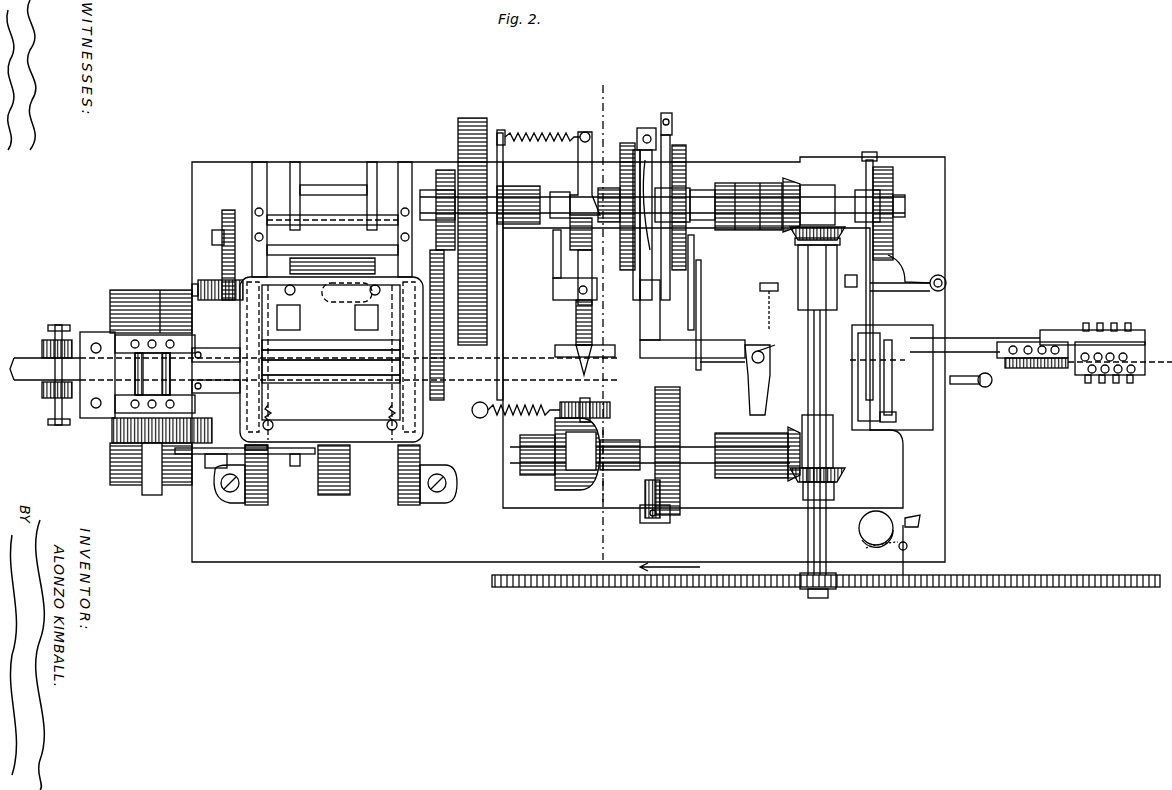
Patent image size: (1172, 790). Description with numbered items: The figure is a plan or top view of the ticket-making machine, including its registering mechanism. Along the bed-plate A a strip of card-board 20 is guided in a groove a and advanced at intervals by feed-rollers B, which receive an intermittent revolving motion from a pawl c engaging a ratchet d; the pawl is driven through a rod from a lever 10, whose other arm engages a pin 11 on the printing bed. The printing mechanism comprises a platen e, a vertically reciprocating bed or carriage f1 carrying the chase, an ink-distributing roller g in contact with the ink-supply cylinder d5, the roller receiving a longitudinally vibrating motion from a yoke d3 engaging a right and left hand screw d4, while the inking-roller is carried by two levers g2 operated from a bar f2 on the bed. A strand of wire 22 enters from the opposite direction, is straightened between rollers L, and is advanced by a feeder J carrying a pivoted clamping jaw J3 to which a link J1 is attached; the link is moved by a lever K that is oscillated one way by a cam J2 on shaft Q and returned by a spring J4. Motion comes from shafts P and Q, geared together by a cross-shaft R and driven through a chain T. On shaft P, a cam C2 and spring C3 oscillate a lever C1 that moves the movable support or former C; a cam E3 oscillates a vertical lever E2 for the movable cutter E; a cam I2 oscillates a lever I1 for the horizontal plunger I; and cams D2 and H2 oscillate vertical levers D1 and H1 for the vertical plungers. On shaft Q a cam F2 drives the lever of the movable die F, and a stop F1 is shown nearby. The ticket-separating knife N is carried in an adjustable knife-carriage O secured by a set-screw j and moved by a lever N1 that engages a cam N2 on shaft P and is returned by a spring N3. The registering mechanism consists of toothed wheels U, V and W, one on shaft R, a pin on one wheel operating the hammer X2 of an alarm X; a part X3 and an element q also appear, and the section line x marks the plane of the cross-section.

The bed-plate A is at (768, 470).
The registering wheel W is at (586, 588).
The registering wheel U is at (795, 588).
The section line x is at (601, 317).
The shaft P is at (718, 215).
The cross-shaft R is at (814, 376).
The cam N2 is at (880, 198).
The spring N3 is at (876, 155).
The knife-carriage O is at (892, 377).
The knife N is at (892, 381).
The lever N1 is at (881, 360).
The rollers L is at (1041, 346).
The set-screw j is at (971, 389).
The strand of wire 22 is at (999, 380).
The alarm X is at (870, 532).
The hammer X2 is at (912, 522).
The registering wheel V is at (900, 588).
The spring X3 is at (880, 548).
The chain T is at (461, 222).
The spring C3 is at (543, 129).
The cam C2 is at (577, 185).
The movable support C is at (590, 358).
The lever C1 is at (600, 300).
The cam D2 is at (617, 206).
The lever D1 is at (635, 285).
The horizontal plunger I is at (646, 205).
The lever I1 is at (645, 165).
The cam I2 is at (640, 205).
The vertical lever E2 is at (666, 118).
The movable cutter E is at (674, 209).
The cam E3 is at (680, 195).
The cam H2 is at (697, 282).
The lever H1 is at (690, 295).
The feeder J is at (752, 352).
The jaw J3 is at (766, 395).
The link J1 is at (692, 374).
The groove a is at (365, 374).
The cam F2 is at (655, 451).
The cam J2 is at (577, 454).
The spring J4 is at (516, 402).
The lever K is at (593, 405).
The shaft Q is at (609, 467).
The bracket F1 is at (650, 500).
The die F is at (655, 525).
The ink-supply cylinder d5 is at (335, 260).
The yoke d3 is at (222, 285).
The right and left hand screw d4 is at (226, 302).
The platen e is at (331, 359).
The ink-distributing roller g is at (345, 300).
The levers g2 is at (331, 327).
The bed or carriage f1 is at (331, 376).
The bar f2 is at (331, 388).
The strip of card-board 20 is at (315, 369).
The feed-rollers B is at (151, 392).
The pawl c is at (165, 430).
The ratchet d is at (112, 438).
The block q is at (212, 462).
The lever 10 is at (282, 455).
The pin 11 is at (295, 466).